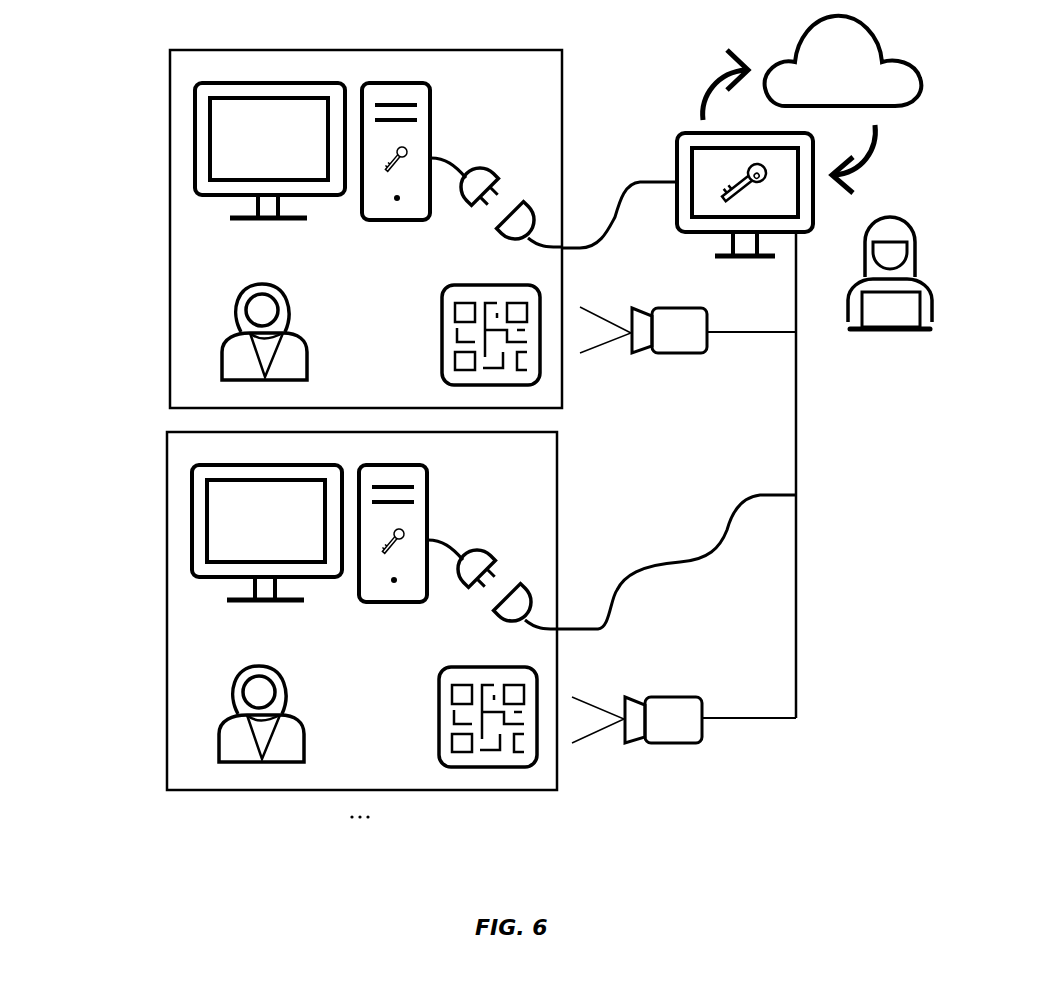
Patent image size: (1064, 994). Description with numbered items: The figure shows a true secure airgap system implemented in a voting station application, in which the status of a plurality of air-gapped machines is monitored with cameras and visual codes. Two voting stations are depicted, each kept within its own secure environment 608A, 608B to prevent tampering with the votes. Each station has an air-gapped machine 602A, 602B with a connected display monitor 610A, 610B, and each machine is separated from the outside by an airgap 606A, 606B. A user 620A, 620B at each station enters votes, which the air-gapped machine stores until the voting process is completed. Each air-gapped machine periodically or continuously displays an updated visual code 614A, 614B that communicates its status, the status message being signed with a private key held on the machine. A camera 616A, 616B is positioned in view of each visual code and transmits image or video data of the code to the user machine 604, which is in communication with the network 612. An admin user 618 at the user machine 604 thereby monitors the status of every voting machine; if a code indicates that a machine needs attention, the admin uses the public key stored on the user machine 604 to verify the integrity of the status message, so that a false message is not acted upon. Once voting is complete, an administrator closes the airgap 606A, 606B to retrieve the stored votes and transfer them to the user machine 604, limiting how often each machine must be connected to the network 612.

The air-gapped machine 602A is at (432, 94).
The air-gapped machine 602B is at (429, 475).
The user machine 604 is at (677, 137).
The airgap 606A is at (514, 183).
The airgap 606B is at (512, 564).
The secure environment 608A is at (168, 67).
The secure environment 608B is at (165, 450).
The display monitor 610A is at (196, 158).
The display monitor 610B is at (193, 538).
The network 612 is at (915, 65).
The visual code 614A is at (442, 333).
The visual code 614B is at (440, 715).
The camera 616A is at (668, 309).
The camera 616B is at (662, 691).
The admin user 618 is at (915, 232).
The user 620A is at (276, 273).
The user 620B is at (274, 644).